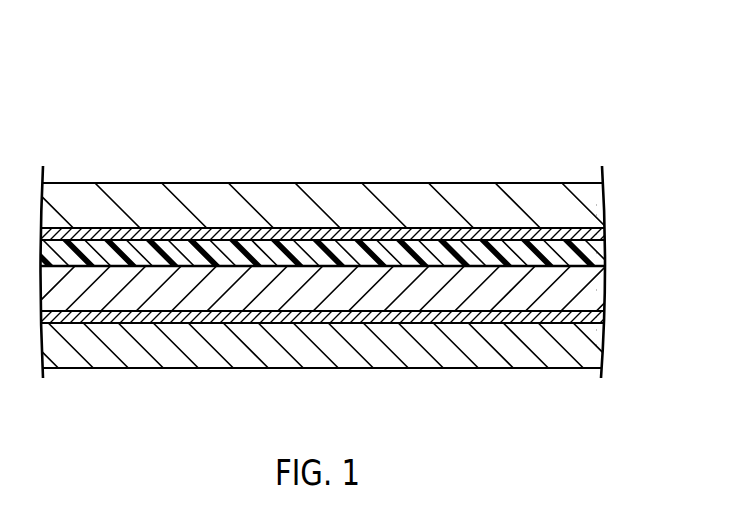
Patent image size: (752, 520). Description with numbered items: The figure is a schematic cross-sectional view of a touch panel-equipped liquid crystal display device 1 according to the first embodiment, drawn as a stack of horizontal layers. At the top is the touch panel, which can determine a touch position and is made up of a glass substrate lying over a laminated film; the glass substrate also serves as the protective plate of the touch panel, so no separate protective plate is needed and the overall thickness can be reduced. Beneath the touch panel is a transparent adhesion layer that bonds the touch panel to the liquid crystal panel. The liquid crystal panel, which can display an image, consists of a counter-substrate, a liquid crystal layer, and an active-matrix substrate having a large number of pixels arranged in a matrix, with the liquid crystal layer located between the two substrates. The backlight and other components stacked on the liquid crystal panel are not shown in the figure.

The touch panel-equipped liquid crystal display device 1 is at (626, 83).